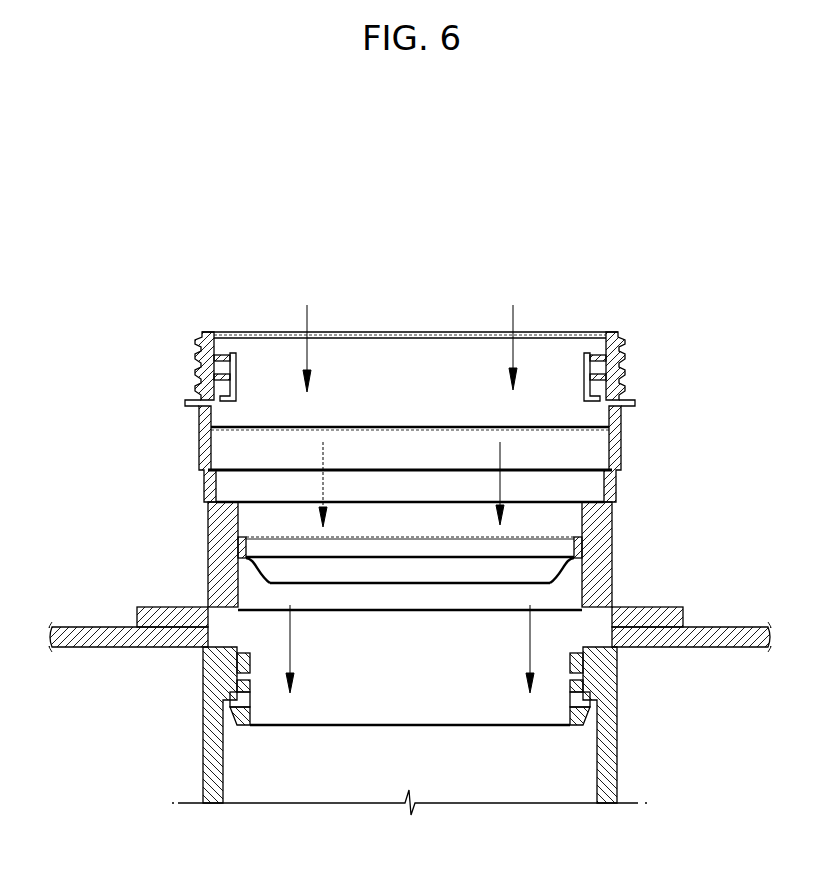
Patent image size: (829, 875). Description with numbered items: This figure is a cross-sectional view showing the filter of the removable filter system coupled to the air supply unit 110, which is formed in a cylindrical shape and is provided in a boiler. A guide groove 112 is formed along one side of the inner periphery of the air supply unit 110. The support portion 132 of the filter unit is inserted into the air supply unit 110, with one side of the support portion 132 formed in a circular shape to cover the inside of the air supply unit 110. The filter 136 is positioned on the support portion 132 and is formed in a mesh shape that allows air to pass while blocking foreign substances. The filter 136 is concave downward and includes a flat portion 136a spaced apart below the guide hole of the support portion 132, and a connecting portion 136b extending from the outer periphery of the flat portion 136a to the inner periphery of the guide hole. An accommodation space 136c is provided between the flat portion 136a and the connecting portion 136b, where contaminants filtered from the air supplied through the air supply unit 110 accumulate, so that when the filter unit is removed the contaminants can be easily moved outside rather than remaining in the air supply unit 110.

The air supply unit 110 is at (622, 450).
The guide groove 112 is at (586, 538).
The support portion 132 is at (583, 537).
The filter 136 is at (317, 549).
The flat portion 136a is at (300, 583).
The connecting portion 136b is at (247, 570).
The accommodation space 136c is at (306, 548).